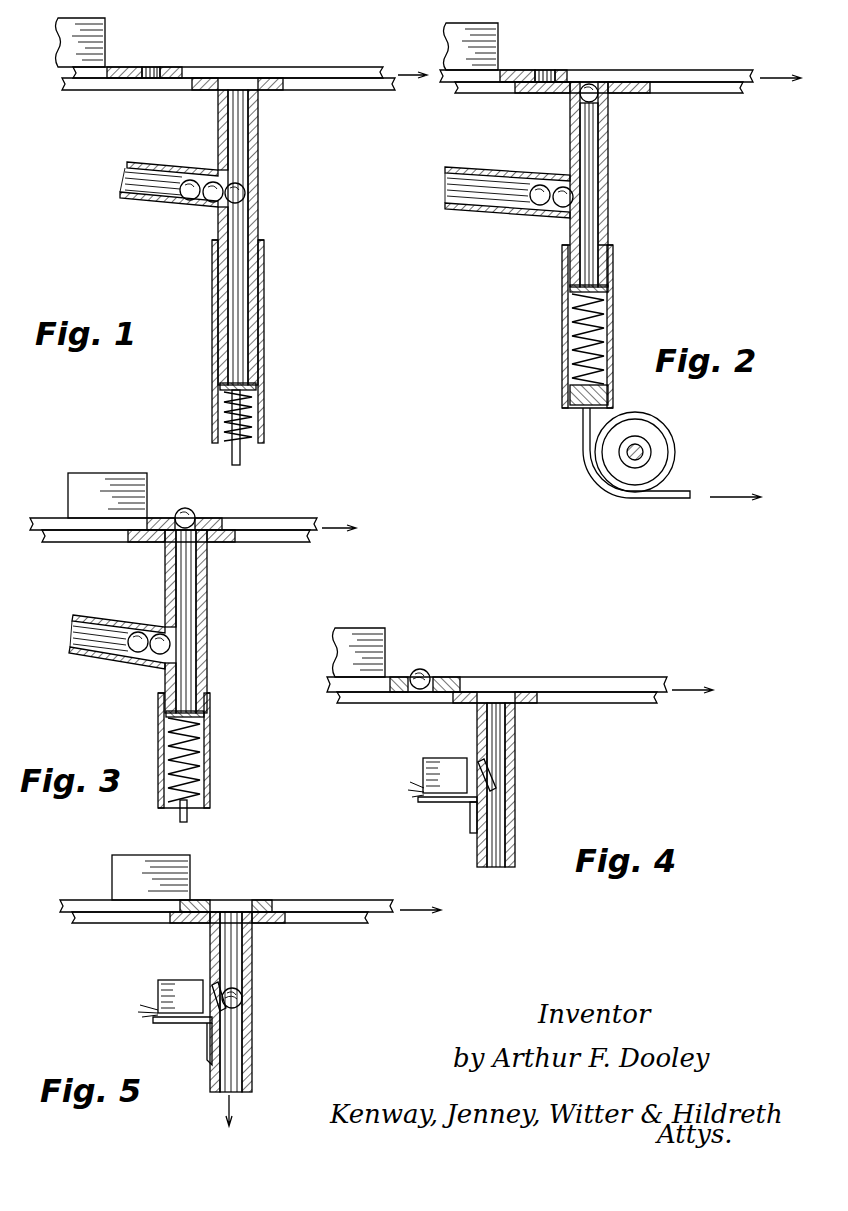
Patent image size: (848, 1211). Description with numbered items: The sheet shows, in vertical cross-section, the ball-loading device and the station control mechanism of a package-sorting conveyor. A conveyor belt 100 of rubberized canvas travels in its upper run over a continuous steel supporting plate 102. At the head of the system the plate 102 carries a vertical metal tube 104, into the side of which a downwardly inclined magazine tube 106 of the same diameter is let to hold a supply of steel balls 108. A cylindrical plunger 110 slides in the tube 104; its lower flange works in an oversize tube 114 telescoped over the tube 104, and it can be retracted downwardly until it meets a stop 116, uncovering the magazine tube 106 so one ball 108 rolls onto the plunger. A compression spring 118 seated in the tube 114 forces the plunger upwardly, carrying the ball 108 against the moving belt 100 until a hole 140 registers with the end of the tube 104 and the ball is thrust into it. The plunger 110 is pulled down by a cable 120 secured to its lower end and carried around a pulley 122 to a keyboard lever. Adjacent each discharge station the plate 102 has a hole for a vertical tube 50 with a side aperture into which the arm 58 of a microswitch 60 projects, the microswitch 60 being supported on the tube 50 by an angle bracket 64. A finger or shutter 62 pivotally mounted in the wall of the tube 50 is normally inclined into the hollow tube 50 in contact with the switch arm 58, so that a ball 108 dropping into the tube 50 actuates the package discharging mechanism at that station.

In FIG. 1, the conveyor belt 100 is at (330, 72).
In FIG. 2, the conveyor belt 100 is at (694, 74).
In FIG. 3, the conveyor belt 100 is at (286, 525).
In FIG. 4, the conveyor belt 100 is at (610, 690).
In FIG. 5, the conveyor belt 100 is at (226, 906).
In FIG. 1, the supporting plate 102 is at (305, 85).
In FIG. 2, the supporting plate 102 is at (662, 92).
In FIG. 3, the supporting plate 102 is at (313, 542).
In FIG. 4, the supporting plate 102 is at (637, 703).
In FIG. 5, the supporting plate 102 is at (220, 917).
In FIG. 1, the vertical metal tube 104 is at (258, 173).
In FIG. 2, the vertical metal tube 104 is at (608, 160).
In FIG. 3, the vertical metal tube 104 is at (207, 572).
In FIG. 1, the magazine tube 106 is at (150, 165).
In FIG. 2, the magazine tube 106 is at (468, 167).
In FIG. 3, the magazine tube 106 is at (80, 668).
In FIG. 1, the steel ball 108 is at (185, 202).
In FIG. 2, the steel ball 108 is at (592, 84).
In FIG. 3, the steel ball 108 is at (191, 513).
In FIG. 4, the steel ball 108 is at (445, 658).
In FIG. 5, the steel ball 108 is at (242, 999).
In FIG. 1, the cylindrical plunger 110 is at (258, 222).
In FIG. 2, the cylindrical plunger 110 is at (608, 197).
In FIG. 3, the cylindrical plunger 110 is at (180, 563).
In FIG. 1, the oversize tube 114 is at (265, 286).
In FIG. 2, the oversize tube 114 is at (615, 284).
In FIG. 3, the oversize tube 114 is at (212, 752).
In FIG. 1, the stop 116 is at (218, 400).
In FIG. 2, the stop 116 is at (580, 410).
In FIG. 3, the stop 116 is at (185, 714).
In FIG. 1, the compression spring 118 is at (218, 424).
In FIG. 2, the compression spring 118 is at (610, 324).
In FIG. 3, the compression spring 118 is at (210, 776).
In FIG. 1, the cable 120 is at (242, 455).
In FIG. 2, the cable 120 is at (663, 498).
In FIG. 3, the cable 120 is at (190, 818).
In FIG. 2, the pulley 122 is at (674, 442).
In FIG. 1, the hole 140 is at (160, 47).
In FIG. 2, the hole 140 is at (560, 56).
In FIG. 4, the vertical tube 50 is at (477, 725).
In FIG. 5, the vertical tube 50 is at (252, 955).
In FIG. 4, the switch arm 58 is at (470, 804).
In FIG. 5, the switch arm 58 is at (210, 985).
In FIG. 4, the microswitch 60 is at (424, 766).
In FIG. 5, the microswitch 60 is at (155, 988).
In FIG. 4, the finger or shutter 62 is at (505, 764).
In FIG. 5, the finger or shutter 62 is at (245, 981).
In FIG. 4, the angle bracket 64 is at (470, 832).
In FIG. 5, the angle bracket 64 is at (207, 1041).